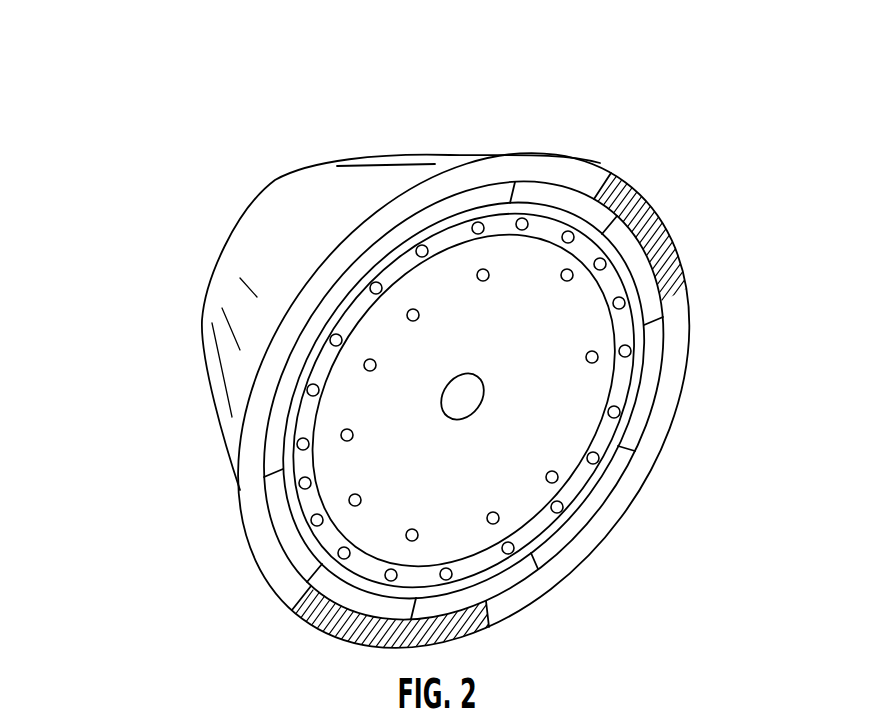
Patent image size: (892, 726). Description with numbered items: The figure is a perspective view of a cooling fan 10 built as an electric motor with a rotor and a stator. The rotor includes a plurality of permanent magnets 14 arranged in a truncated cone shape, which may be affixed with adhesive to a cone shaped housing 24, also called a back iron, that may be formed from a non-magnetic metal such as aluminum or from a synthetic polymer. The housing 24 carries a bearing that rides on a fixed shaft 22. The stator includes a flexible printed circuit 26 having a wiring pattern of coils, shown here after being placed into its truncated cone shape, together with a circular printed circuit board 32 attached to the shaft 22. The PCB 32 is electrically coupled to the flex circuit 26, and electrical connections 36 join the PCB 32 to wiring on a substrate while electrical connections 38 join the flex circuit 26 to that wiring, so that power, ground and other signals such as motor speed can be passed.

The cooling fan 10 is at (128, 281).
The permanent magnets 14 is at (642, 238).
The fixed shaft 22 is at (475, 390).
The cone shaped housing 24 is at (237, 245).
The flexible printed circuit 26 is at (550, 230).
The circular printed circuit board 32 is at (446, 277).
The electrical connections 36 is at (376, 363).
The electrical connections 38 is at (374, 282).